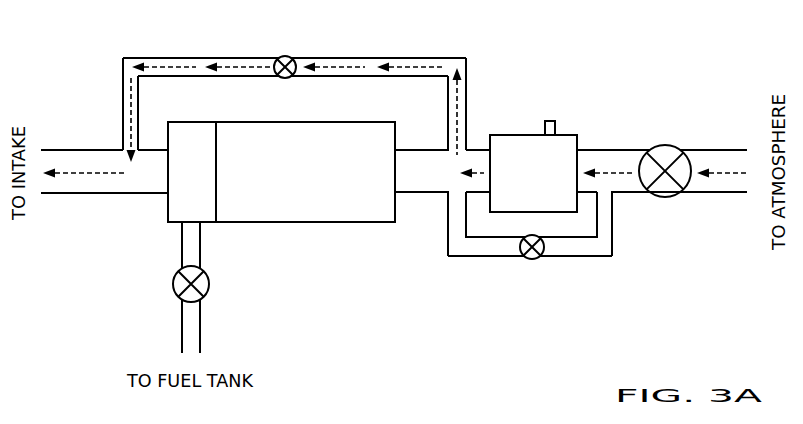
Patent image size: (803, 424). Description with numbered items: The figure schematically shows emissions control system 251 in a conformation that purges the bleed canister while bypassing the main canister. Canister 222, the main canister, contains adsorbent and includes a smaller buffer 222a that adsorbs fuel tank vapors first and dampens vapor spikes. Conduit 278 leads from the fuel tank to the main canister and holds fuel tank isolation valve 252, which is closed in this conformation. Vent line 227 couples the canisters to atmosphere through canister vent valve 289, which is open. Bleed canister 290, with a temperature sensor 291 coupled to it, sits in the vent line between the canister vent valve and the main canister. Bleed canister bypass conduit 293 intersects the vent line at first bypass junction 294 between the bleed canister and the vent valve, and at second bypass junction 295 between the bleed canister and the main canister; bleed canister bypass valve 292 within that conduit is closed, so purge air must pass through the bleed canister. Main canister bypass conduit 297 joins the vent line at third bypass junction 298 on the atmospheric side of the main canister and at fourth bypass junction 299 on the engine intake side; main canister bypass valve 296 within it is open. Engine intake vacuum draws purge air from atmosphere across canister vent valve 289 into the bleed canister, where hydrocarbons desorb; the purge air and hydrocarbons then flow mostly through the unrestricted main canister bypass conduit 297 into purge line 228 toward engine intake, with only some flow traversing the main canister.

The emissions control system 251 is at (625, 60).
The purge line 228 is at (83, 150).
The fourth bypass junction 299 is at (111, 138).
The main canister bypass conduit 297 is at (368, 58).
The main canister bypass valve 296 is at (288, 57).
The canister 222 is at (320, 122).
The buffer 222a is at (190, 122).
The vent line 227 is at (402, 150).
The third bypass junction 298 is at (477, 136).
The bleed canister 290 is at (547, 183).
The temperature sensor 291 is at (545, 131).
The canister vent valve 289 is at (665, 146).
The second bypass junction 295 is at (438, 207).
The bleed canister bypass conduit 293 is at (615, 257).
The first bypass junction 294 is at (622, 208).
The bleed canister bypass valve 292 is at (536, 257).
The fuel tank isolation valve 252 is at (181, 300).
The conduit 278 is at (182, 237).